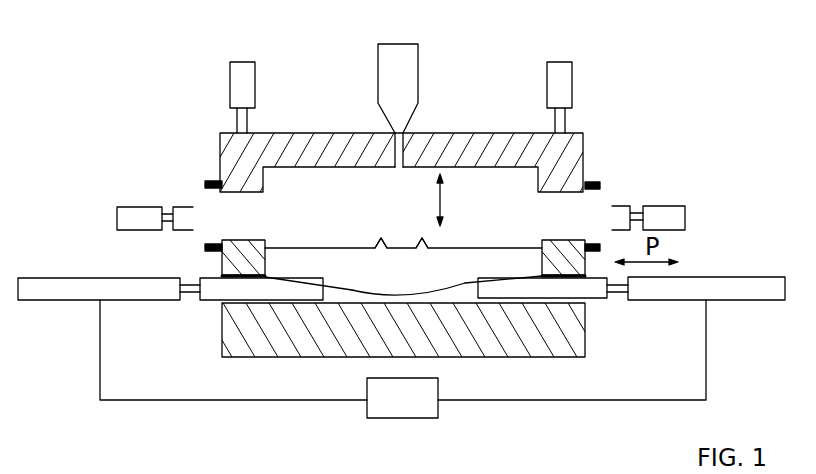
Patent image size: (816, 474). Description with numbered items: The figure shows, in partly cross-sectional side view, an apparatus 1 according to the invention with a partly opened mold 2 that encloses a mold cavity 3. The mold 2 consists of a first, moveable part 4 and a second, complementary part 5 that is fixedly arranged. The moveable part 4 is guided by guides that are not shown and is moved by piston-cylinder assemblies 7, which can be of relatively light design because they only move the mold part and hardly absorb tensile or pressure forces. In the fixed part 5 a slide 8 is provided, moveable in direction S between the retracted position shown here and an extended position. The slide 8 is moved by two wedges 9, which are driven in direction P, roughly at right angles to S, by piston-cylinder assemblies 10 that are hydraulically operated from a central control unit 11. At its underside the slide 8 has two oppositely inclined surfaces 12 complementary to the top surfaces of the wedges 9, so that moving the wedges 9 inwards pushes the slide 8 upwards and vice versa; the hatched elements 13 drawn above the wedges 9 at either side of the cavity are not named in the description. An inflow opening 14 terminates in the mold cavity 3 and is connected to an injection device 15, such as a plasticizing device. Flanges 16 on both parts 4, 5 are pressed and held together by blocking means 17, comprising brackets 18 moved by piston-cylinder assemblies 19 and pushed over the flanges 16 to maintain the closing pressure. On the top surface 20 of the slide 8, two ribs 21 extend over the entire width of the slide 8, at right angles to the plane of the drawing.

The apparatus 1 is at (705, 140).
The mold 2 is at (600, 133).
The mold cavity 3 is at (448, 201).
The first, moveable part 4 is at (330, 145).
The second, complementary part 5 is at (583, 336).
The piston-cylinder assemblies 7 is at (238, 80).
The slide 8 is at (405, 281).
The wedges 9 is at (205, 298).
The piston-cylinder assemblies 10 is at (62, 302).
The central control unit 11 is at (418, 410).
The inclined surfaces 12 is at (352, 290).
The slide 13 is at (307, 276).
The inflow opening 14 is at (405, 132).
The injection device 15 is at (430, 53).
The flanges 16 is at (212, 181).
The blocking means 17 is at (112, 195).
The brackets 18 is at (182, 205).
The piston-cylinder assemblies 19 is at (133, 219).
The top surface 20 is at (293, 246).
The ribs 21 is at (377, 238).